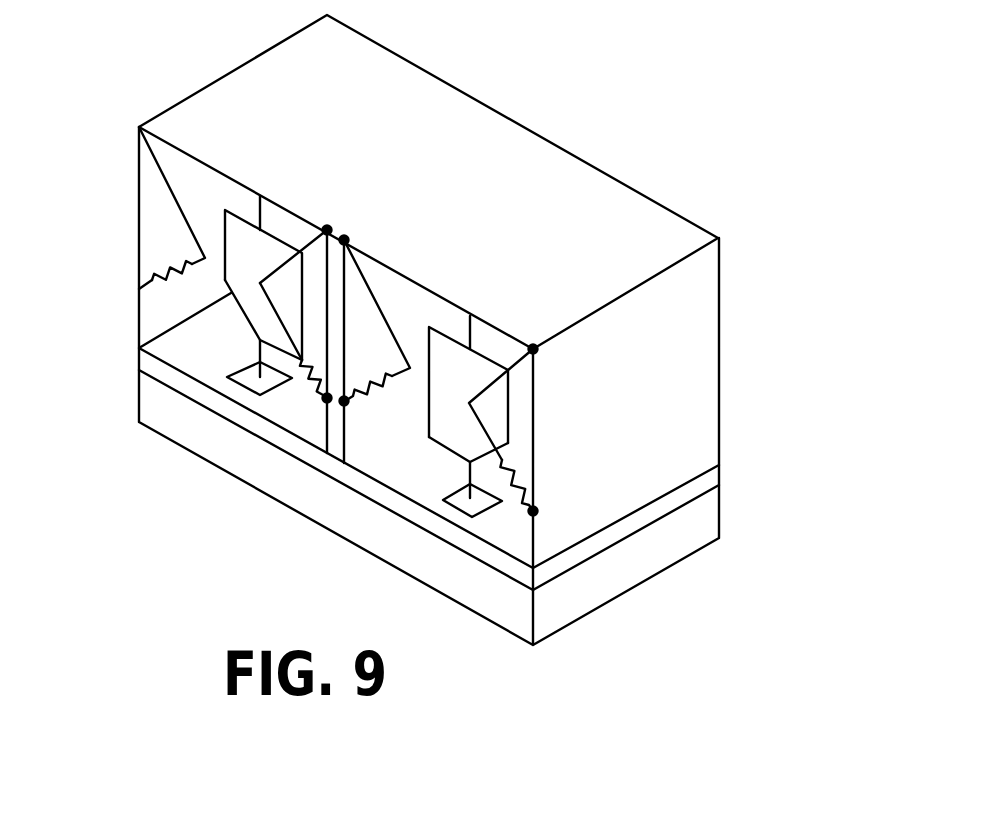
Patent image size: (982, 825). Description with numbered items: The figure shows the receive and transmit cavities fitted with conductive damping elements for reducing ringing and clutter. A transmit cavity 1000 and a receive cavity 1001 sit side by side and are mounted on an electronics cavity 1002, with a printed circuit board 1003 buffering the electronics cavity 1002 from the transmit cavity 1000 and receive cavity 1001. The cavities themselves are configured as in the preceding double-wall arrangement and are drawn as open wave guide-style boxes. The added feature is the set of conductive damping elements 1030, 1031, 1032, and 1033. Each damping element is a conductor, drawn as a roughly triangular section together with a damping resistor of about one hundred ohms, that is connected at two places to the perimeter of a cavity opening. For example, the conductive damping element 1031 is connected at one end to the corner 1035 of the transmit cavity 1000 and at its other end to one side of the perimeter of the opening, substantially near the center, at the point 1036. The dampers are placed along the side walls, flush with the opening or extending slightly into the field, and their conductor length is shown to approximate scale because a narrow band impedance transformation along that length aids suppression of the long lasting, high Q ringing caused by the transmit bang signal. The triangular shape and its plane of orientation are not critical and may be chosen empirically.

The transmit cavity 1000 is at (370, 98).
The receive cavity 1001 is at (583, 252).
The electronics cavity 1002 is at (598, 580).
The printed circuit board 1003 is at (638, 518).
The conductive damping element 1030 is at (177, 202).
The conductive damping element 1031 is at (286, 263).
The conductive damping element 1032 is at (377, 302).
The conductive damping element 1033 is at (488, 432).
The corner of the transmit cavity 1035 is at (333, 229).
The point 1036 is at (327, 400).